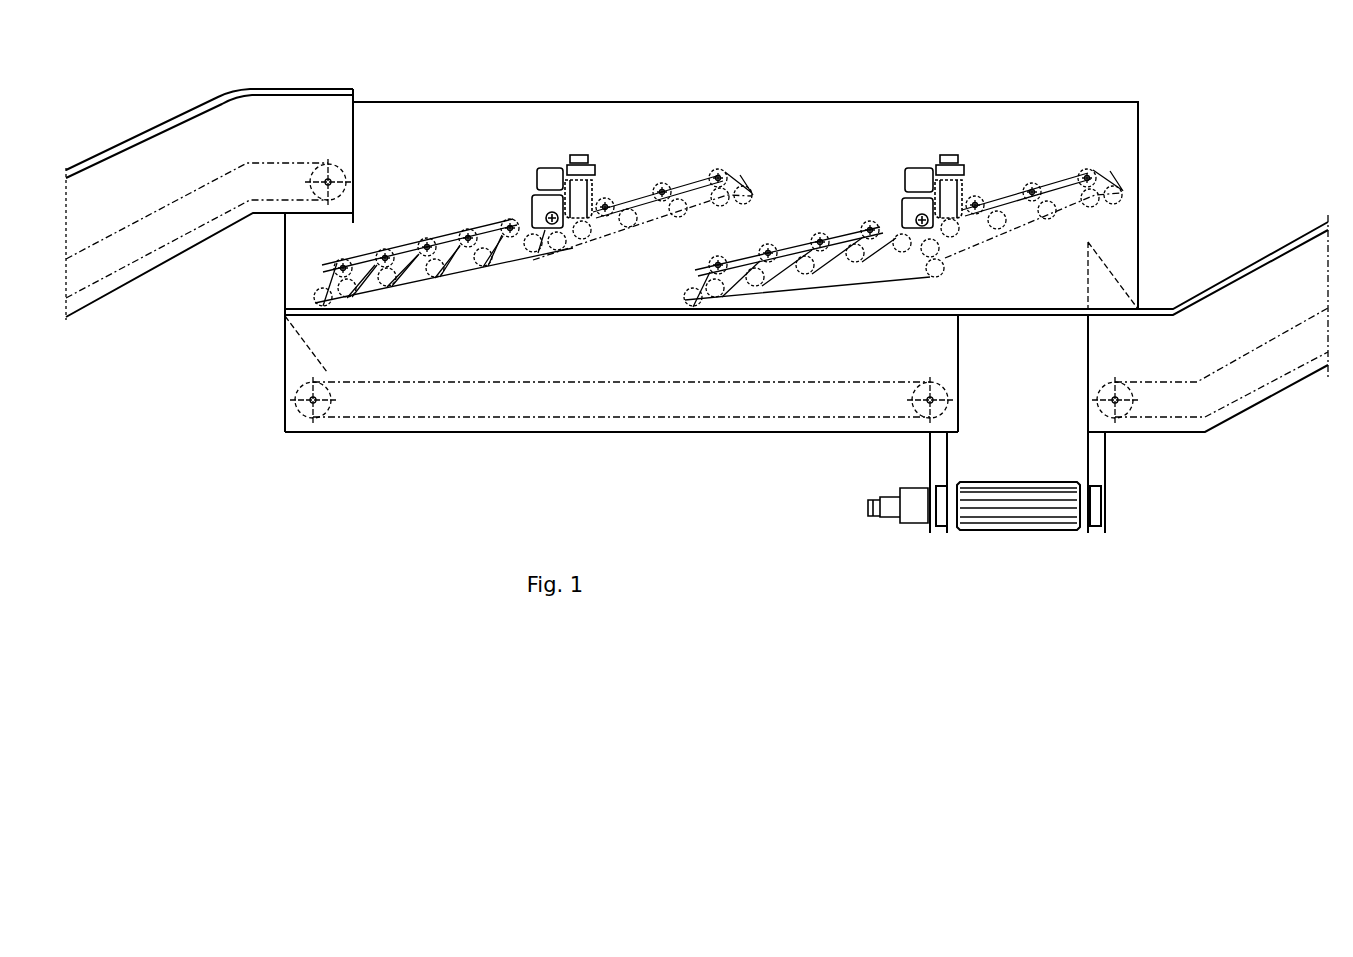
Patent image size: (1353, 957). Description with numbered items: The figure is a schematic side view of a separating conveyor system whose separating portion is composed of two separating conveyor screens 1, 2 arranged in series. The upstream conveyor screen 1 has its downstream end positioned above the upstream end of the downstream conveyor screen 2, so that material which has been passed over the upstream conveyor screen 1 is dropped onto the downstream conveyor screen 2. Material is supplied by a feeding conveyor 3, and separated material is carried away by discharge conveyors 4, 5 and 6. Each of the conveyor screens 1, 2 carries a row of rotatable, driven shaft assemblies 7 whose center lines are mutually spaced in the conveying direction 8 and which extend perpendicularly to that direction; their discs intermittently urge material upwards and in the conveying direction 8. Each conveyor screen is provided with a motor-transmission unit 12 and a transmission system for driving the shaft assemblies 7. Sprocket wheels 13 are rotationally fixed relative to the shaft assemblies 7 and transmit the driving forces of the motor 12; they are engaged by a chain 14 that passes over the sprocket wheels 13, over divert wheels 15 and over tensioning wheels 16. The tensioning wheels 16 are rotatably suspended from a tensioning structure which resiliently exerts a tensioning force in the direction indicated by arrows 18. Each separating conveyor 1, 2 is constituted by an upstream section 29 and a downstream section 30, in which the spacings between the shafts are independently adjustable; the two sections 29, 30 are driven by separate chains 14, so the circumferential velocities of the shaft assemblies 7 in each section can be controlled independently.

The upstream separating conveyor screen 1 is at (485, 133).
The downstream separating conveyor screen 2 is at (1052, 123).
The feeding conveyor 3 is at (175, 268).
The discharge conveyor 4 is at (655, 445).
The discharge conveyor 5 is at (857, 505).
The discharge conveyor 6 is at (1253, 240).
The shaft assembly 7 is at (383, 257).
The conveying direction 8 is at (607, 140).
The motor-transmission unit 12 is at (578, 155).
The sprocket wheel 13 is at (468, 233).
The chain 14 is at (368, 298).
The divert wheel 15 is at (483, 260).
The tensioning wheel 16 is at (556, 250).
The tensioning force direction 18 is at (552, 240).
The upstream section 29 is at (427, 212).
The downstream section 30 is at (648, 182).